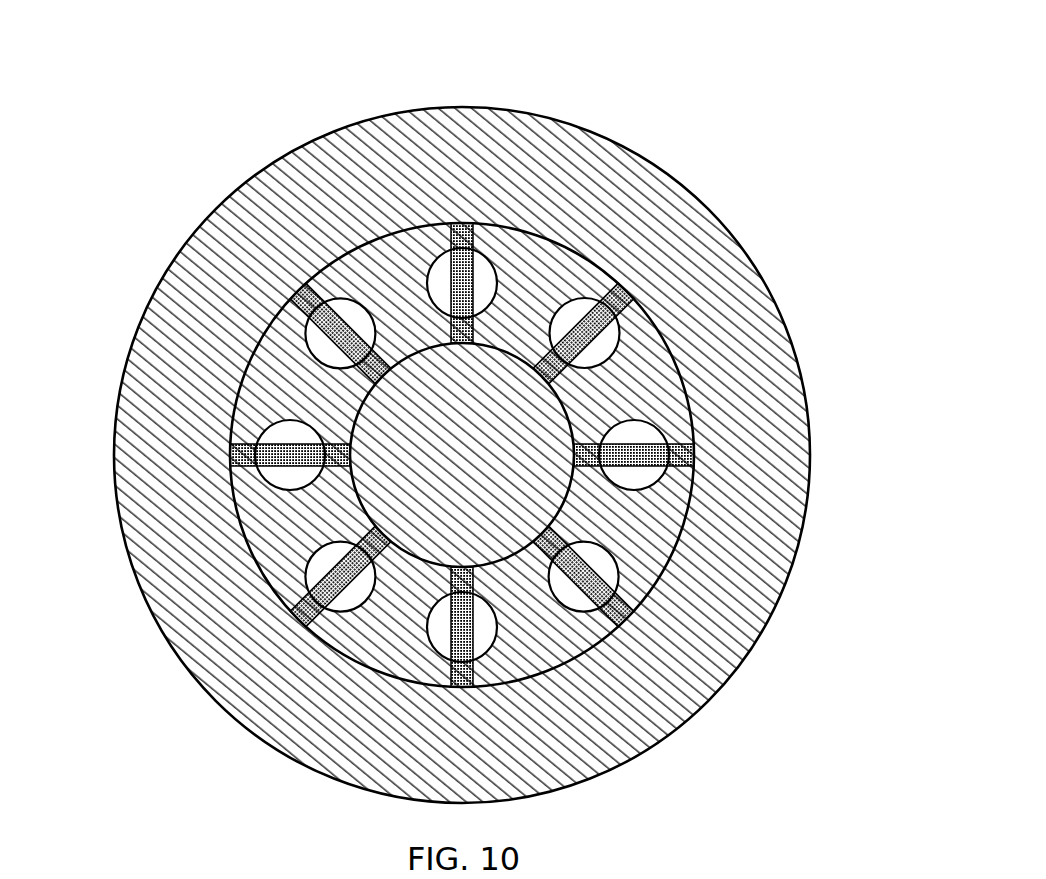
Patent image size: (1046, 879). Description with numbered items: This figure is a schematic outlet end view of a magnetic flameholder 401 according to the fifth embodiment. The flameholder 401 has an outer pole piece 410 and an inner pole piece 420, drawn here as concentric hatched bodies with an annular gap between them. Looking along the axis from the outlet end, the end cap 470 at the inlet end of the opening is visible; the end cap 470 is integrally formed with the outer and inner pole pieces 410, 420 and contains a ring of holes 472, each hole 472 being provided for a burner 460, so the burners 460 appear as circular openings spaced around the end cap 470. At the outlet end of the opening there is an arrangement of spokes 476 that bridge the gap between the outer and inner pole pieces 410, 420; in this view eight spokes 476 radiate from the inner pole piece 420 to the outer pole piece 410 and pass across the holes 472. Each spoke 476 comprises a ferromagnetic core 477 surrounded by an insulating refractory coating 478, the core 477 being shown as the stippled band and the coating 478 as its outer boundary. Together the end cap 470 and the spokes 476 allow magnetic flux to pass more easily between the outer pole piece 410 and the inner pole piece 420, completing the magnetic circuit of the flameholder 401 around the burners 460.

The magnetic flameholder 401 is at (818, 26).
The outer pole piece 410 is at (583, 170).
The inner pole piece 420 is at (567, 493).
The burner 460 is at (615, 358).
The end cap 470 is at (685, 427).
The hole 472 is at (563, 297).
The spoke 476 is at (349, 600).
The ferromagnetic core 477 is at (233, 458).
The insulating refractory coating 478 is at (290, 472).